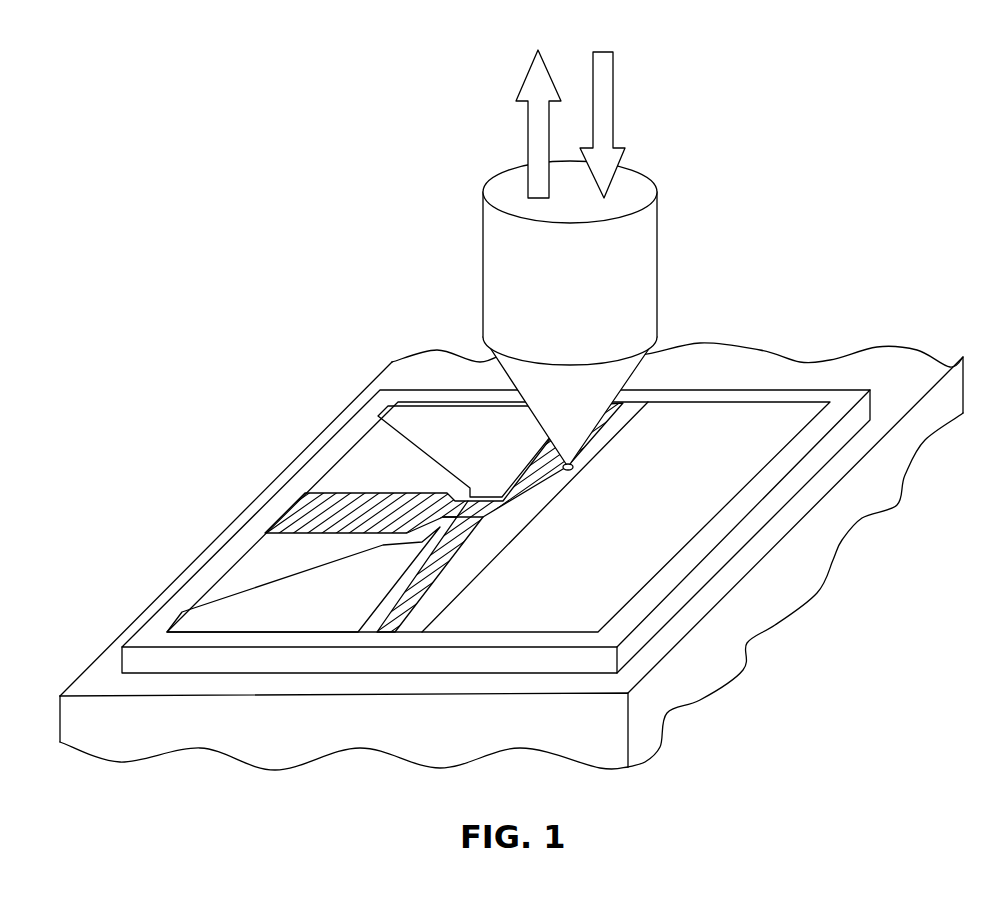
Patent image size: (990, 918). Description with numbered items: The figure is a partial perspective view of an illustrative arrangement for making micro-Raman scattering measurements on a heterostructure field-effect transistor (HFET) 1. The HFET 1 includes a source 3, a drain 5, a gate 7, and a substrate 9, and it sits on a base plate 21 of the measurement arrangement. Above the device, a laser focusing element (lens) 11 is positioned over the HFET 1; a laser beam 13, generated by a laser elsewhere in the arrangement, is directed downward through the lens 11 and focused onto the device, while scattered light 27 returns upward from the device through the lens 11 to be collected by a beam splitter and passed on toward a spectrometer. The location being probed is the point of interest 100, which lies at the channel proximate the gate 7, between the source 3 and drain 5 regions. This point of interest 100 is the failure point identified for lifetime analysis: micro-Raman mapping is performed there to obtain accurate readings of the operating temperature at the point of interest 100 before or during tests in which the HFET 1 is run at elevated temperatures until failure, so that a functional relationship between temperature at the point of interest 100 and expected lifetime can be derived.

The heterostructure field-effect transistor 1 is at (785, 566).
The source 3 is at (442, 418).
The drain 5 is at (773, 413).
The gate 7 is at (313, 507).
The substrate 9 is at (800, 475).
The laser focusing element (lens) 11 is at (647, 267).
The laser beam 13 is at (613, 92).
The base plate 21 is at (692, 670).
The scattered light 27 is at (525, 140).
The point of interest 100 is at (474, 534).